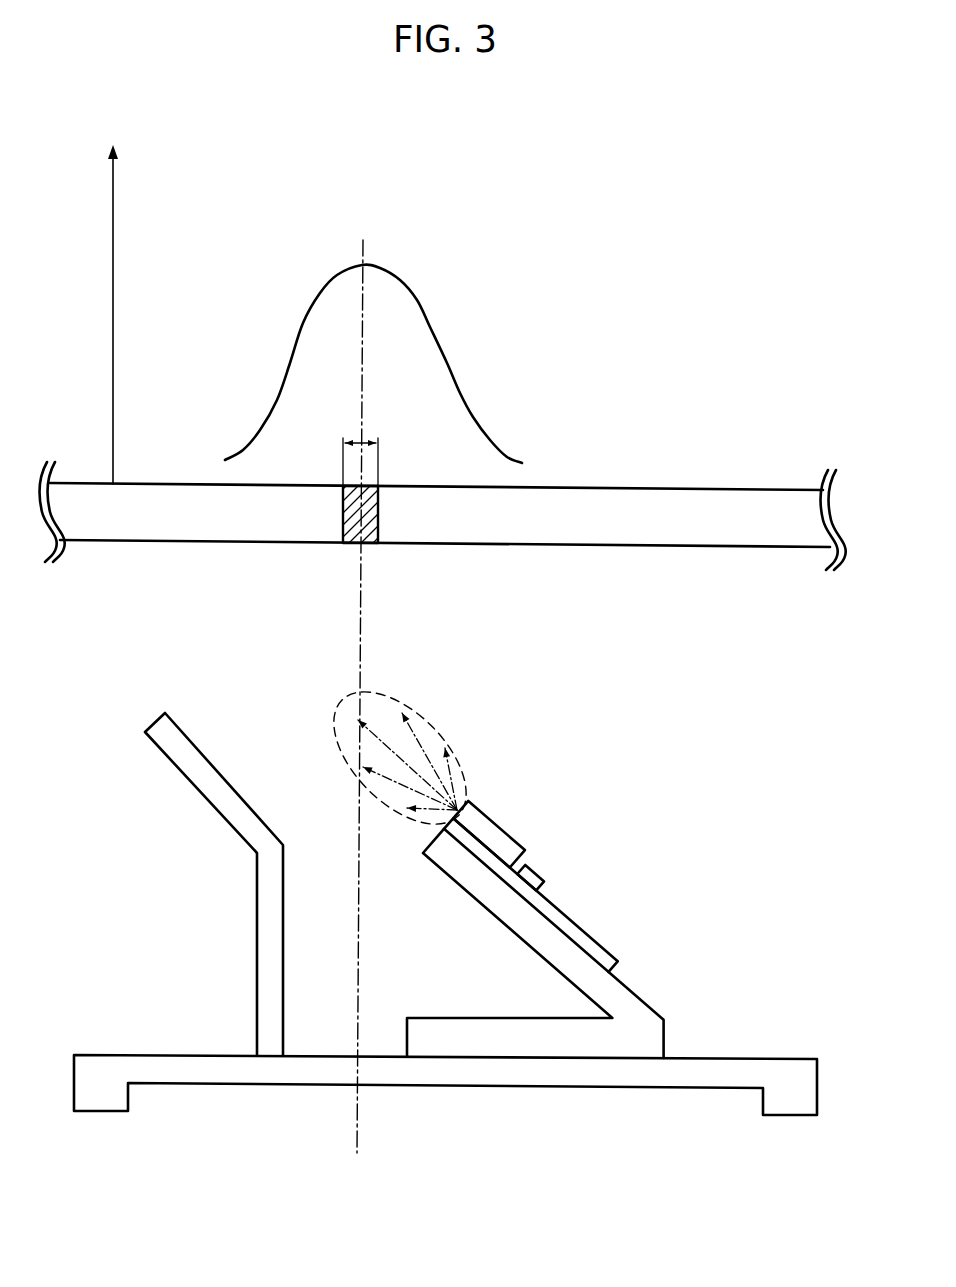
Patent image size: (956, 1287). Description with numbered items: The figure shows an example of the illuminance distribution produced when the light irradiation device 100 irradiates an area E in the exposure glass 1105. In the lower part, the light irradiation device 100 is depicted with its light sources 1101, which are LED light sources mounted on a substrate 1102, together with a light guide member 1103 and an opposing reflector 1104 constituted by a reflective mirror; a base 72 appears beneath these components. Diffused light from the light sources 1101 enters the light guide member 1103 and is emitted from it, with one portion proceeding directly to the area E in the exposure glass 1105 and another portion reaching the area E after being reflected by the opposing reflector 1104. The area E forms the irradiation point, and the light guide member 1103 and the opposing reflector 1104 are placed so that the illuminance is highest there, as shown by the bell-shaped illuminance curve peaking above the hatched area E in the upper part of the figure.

The light irradiation device 100 is at (676, 243).
The holder 72 is at (778, 1065).
The light sources 1101 is at (535, 872).
The substrate 1102 is at (570, 928).
The light guide member 1103 is at (495, 833).
The opposing reflector 1104 is at (212, 805).
The exposure glass 1105 is at (658, 500).
The area E is at (362, 442).